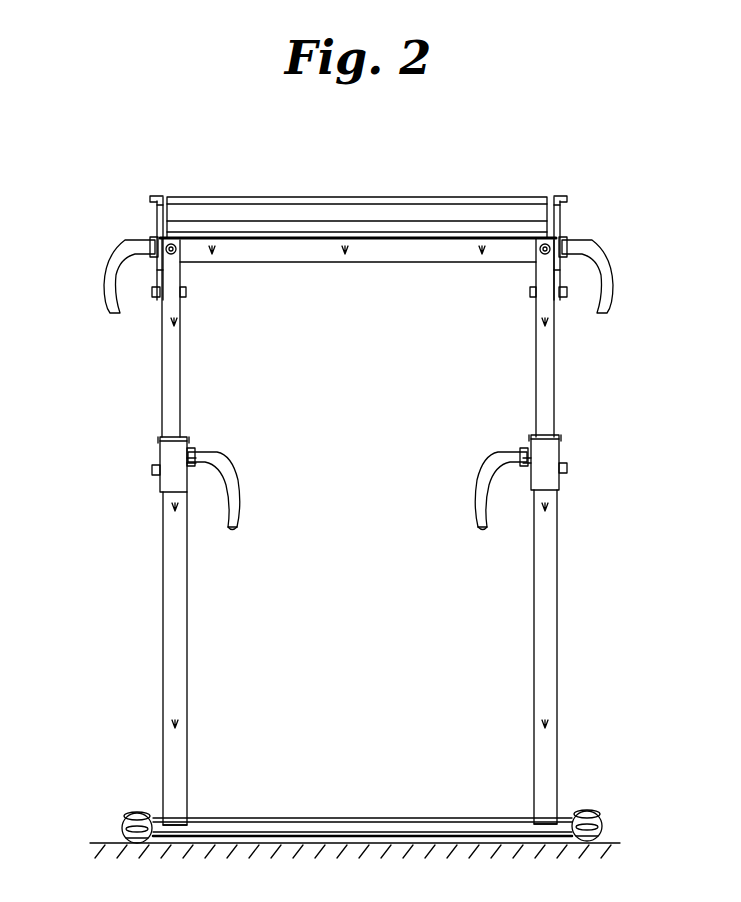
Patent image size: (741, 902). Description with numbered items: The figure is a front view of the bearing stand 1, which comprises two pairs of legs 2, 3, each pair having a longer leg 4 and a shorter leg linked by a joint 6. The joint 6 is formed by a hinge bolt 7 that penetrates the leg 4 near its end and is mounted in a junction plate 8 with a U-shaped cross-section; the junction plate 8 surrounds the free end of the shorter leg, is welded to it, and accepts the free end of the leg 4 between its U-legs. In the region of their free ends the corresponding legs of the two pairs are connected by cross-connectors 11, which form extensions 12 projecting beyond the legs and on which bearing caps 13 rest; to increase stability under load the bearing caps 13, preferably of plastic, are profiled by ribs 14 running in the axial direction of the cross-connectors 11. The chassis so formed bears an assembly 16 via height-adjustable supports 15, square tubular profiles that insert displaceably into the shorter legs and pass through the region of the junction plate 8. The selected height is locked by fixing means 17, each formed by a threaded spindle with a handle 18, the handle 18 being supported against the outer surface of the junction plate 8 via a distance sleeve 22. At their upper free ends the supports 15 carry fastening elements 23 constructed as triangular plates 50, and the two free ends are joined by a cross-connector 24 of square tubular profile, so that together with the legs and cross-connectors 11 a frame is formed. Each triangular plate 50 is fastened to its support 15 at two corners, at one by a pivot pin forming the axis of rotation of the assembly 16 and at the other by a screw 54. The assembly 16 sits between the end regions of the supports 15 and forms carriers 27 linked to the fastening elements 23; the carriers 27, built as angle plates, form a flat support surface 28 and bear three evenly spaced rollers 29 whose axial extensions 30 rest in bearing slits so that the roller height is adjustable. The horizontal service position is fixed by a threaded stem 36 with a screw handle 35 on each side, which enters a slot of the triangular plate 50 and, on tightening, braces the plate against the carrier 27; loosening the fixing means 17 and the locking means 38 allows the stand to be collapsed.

The bearing stand 1 is at (605, 198).
The leg pair 2 is at (590, 672).
The leg pair 3 is at (137, 672).
The leg 4 is at (180, 543).
The joint 6 is at (148, 482).
The hinge bolt 7 is at (151, 470).
The junction plate 8 is at (158, 441).
The cross-connector 11 is at (350, 826).
The extension 12 is at (128, 812).
The bearing cap 13 is at (122, 826).
The rib 14 is at (140, 840).
The support 15 is at (168, 350).
The assembly 16 is at (460, 180).
The fixing means 17 is at (258, 477).
The handle 18 is at (238, 495).
The distance sleeve 22 is at (192, 453).
The fastening element 23 is at (155, 303).
The cross-connector 24 is at (365, 252).
The carrier 27 is at (156, 208).
The support surface 28 is at (153, 196).
The roller 29 is at (341, 197).
The axial extension 30 is at (157, 217).
The screw handle 35 is at (115, 268).
The threaded stem 36 is at (170, 242).
The locking means 38 is at (98, 297).
The triangular plate 50 is at (181, 275).
The screw 54 is at (186, 294).